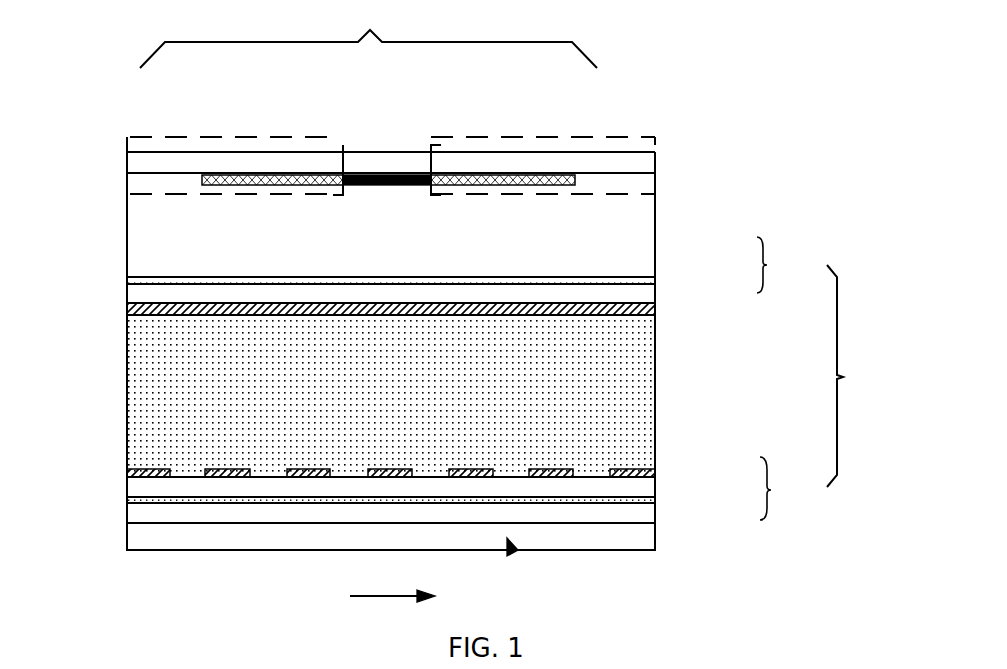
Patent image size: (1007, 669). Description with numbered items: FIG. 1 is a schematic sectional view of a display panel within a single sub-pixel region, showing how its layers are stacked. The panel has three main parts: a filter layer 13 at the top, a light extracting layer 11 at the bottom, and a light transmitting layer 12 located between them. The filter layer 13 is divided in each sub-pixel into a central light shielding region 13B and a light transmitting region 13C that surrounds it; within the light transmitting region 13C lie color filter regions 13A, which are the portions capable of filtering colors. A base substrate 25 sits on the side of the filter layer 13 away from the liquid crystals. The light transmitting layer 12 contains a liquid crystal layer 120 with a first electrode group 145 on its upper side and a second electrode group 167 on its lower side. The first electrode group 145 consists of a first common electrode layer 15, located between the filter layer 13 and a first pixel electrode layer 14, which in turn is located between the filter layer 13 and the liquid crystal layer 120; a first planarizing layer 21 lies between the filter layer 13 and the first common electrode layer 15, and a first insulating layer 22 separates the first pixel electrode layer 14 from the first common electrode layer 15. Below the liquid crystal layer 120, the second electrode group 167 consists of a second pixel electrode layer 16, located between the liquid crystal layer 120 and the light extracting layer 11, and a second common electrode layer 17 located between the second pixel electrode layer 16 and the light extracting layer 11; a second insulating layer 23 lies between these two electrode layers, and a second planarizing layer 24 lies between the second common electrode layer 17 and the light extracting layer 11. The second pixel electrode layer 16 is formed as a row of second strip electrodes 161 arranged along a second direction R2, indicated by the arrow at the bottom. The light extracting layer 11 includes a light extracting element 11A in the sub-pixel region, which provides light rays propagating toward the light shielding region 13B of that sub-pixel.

The light extracting layer 11 is at (140, 543).
The light extracting element 11A is at (518, 553).
The light transmitting layer 12 is at (854, 376).
The liquid crystal layer 120 is at (635, 396).
The filter layer 13 is at (368, 35).
The color filter region 13A is at (260, 175).
The light shielding region 13B is at (383, 173).
The light transmitting region 13C is at (163, 132).
The first pixel electrode layer 14 is at (640, 303).
The first electrode group 145 is at (784, 265).
The first common electrode layer 15 is at (630, 277).
The second pixel electrode layer 16 is at (388, 452).
The second strip electrode 161 is at (140, 463).
The second electrode group 167 is at (787, 488).
The second common electrode layer 17 is at (640, 497).
The first planarizing layer 21 is at (152, 218).
The first insulating layer 22 is at (152, 297).
The second insulating layer 23 is at (140, 487).
The second planarizing layer 24 is at (140, 515).
The base substrate 25 is at (633, 166).
The second direction R2 is at (392, 582).